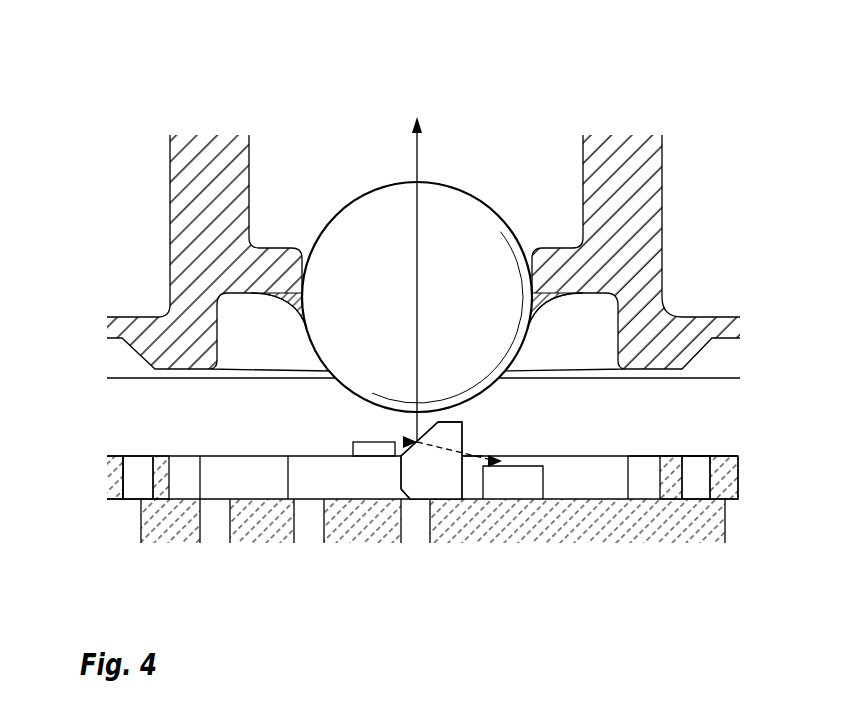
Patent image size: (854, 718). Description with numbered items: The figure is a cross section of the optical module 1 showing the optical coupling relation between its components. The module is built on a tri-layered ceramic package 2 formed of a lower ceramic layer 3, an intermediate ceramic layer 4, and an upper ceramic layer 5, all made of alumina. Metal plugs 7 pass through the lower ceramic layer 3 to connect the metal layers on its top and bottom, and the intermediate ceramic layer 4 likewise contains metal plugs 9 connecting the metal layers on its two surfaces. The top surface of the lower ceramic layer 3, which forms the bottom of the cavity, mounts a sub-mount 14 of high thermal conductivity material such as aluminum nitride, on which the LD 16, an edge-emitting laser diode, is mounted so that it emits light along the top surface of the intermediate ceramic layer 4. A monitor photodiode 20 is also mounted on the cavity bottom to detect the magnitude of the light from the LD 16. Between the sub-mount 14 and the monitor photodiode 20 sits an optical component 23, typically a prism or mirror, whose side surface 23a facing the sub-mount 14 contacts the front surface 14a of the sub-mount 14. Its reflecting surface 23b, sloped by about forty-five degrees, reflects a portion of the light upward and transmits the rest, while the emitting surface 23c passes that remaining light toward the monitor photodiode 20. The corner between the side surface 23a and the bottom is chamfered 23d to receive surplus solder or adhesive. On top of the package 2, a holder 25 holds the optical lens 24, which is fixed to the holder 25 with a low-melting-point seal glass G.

The optical module 1 is at (158, 82).
The tri-layered ceramic package 2 is at (700, 451).
The lower ceramic layer 3 is at (265, 527).
The intermediate ceramic layer 4 is at (162, 462).
The upper ceramic layer 5 is at (168, 421).
The metal plugs 7 is at (205, 527).
The metal plugs 9 is at (133, 490).
The sub-mount 14 is at (347, 482).
The front surface of the sub-mount 14a is at (413, 463).
The LD 16 is at (362, 447).
The monitor photodiode 20 is at (533, 482).
The optical component 23 is at (449, 494).
The side surface 23a is at (401, 475).
The reflecting surface 23b is at (416, 438).
The emitting surface 23c is at (464, 433).
The chamfer 23d is at (441, 488).
The optical lens 24 is at (455, 203).
The holder 25 is at (655, 205).
The seal glass G is at (277, 316).